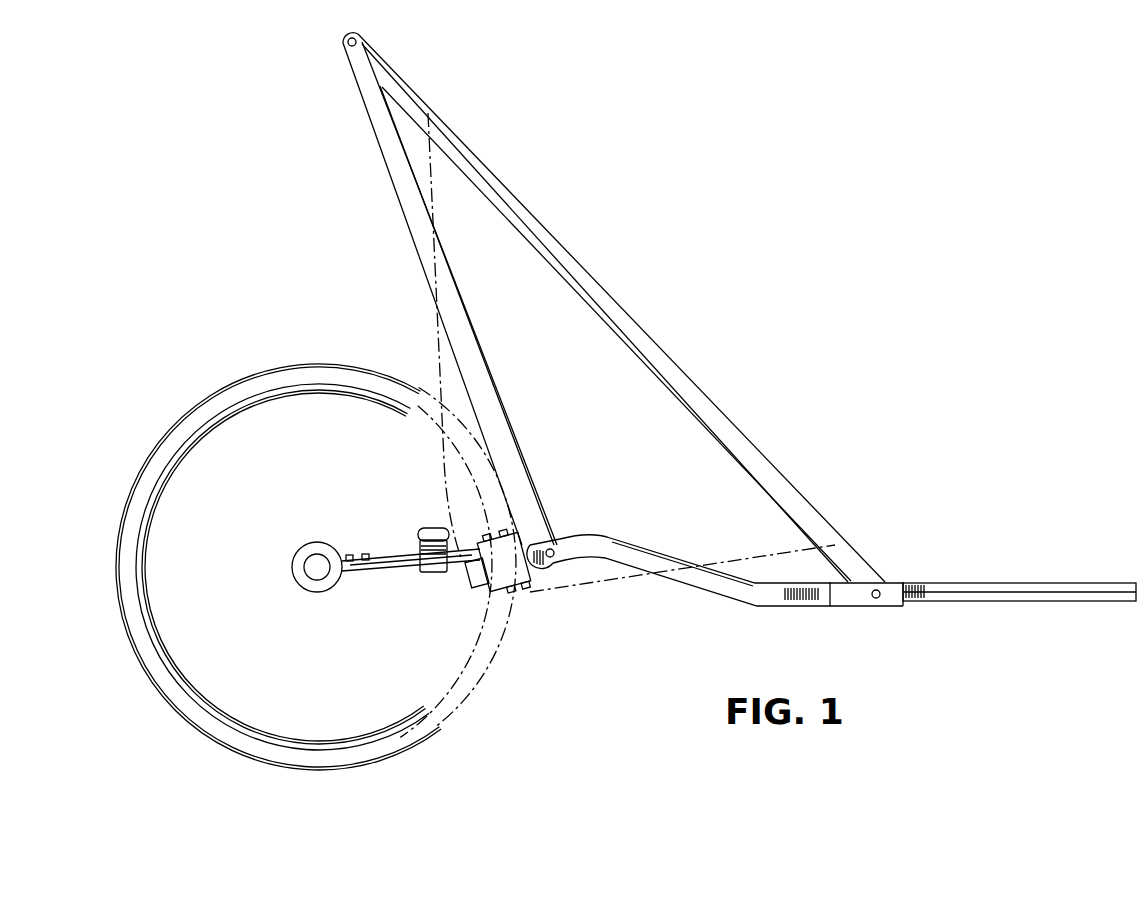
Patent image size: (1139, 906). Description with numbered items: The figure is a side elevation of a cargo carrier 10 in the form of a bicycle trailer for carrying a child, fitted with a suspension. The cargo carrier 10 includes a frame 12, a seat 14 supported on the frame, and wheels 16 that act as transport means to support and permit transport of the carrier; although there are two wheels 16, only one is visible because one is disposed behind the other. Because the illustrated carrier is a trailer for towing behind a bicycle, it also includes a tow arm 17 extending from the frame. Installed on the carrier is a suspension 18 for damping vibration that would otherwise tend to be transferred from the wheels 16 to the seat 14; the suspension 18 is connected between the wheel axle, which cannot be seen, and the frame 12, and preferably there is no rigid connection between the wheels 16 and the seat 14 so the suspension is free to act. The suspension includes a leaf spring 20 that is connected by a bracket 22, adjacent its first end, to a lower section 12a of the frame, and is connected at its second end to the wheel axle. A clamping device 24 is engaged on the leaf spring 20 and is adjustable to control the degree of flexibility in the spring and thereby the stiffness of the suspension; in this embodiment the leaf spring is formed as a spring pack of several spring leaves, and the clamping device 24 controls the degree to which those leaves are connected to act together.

The cargo carrier 10 is at (757, 338).
The frame 12 is at (395, 84).
The lower section of the frame 12a is at (690, 575).
The seat 14 is at (434, 332).
The wheels 16 is at (248, 376).
The tow arm 17 is at (1038, 588).
The suspension 18 is at (405, 576).
The leaf spring 20 is at (458, 568).
The bracket 22 is at (513, 563).
The clamping device 24 is at (432, 572).